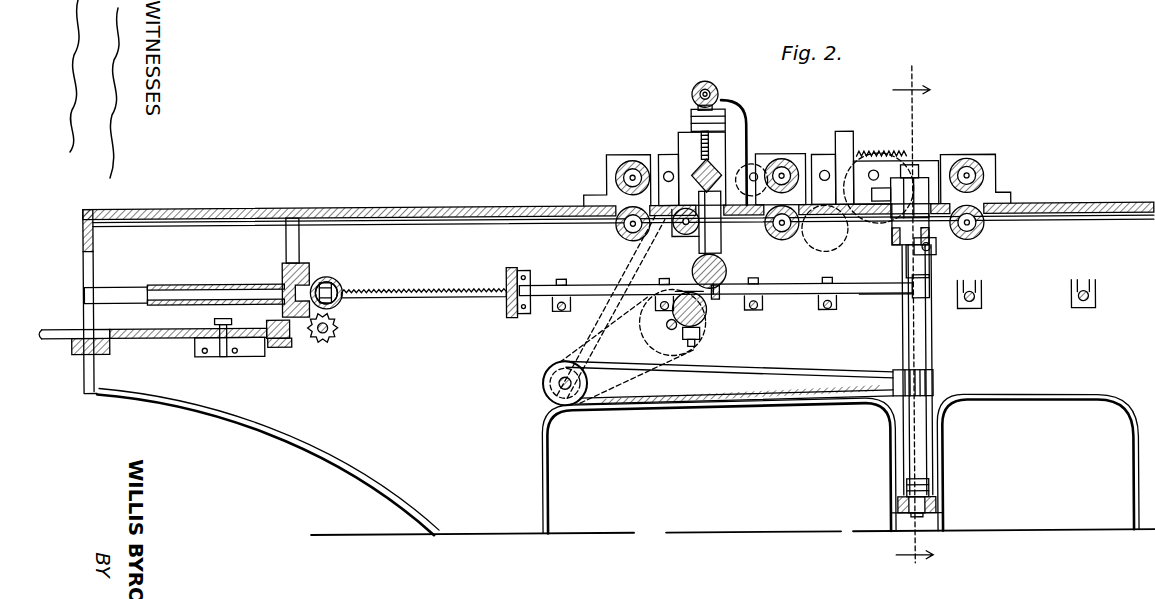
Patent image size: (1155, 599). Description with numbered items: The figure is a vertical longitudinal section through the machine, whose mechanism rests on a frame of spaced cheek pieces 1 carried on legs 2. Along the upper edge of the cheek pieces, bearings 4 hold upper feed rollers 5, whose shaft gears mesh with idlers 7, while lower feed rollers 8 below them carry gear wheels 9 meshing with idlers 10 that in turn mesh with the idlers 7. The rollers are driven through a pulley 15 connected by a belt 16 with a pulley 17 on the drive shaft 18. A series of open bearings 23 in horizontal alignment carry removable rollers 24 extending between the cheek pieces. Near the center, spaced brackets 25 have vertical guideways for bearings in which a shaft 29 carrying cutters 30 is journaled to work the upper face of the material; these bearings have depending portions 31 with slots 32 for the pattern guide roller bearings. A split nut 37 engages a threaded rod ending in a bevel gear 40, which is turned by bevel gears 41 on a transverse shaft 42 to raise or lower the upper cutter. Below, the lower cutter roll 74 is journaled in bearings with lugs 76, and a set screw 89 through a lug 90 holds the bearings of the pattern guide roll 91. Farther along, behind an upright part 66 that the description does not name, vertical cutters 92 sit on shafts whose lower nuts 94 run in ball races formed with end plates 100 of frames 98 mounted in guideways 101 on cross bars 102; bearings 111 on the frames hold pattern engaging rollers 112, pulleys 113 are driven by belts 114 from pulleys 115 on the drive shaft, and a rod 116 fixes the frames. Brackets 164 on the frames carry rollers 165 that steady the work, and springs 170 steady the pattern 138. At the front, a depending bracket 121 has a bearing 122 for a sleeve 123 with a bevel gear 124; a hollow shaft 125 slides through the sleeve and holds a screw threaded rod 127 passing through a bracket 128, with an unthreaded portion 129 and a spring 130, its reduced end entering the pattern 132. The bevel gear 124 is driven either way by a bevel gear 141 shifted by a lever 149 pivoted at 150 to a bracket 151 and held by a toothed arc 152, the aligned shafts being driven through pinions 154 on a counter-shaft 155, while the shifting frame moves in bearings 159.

The cheek pieces 1 is at (619, 288).
The legs 2 is at (619, 369).
The bearings 4 is at (600, 185).
The upper feed rollers 5 is at (622, 170).
The idlers 7 is at (664, 162).
The lower feed rollers 8 is at (618, 234).
The gear wheels 9 is at (764, 240).
The idlers 10 is at (828, 252).
The pulley 15 is at (700, 340).
The belt 16 is at (630, 374).
The pulley 17 is at (543, 390).
The drive shaft 18 is at (548, 381).
The open bearings 23 is at (560, 315).
The rollers 24 is at (560, 287).
The brackets 25 is at (690, 165).
The shaft 29 is at (744, 140).
The cutters 30 is at (694, 176).
The depending portions 31 is at (727, 273).
The slots 32 is at (718, 302).
The split nut 37 is at (728, 118).
The bevel gear 40 is at (697, 103).
The bevel gears 41 is at (703, 84).
The transverse shaft 42 is at (712, 84).
The post 66 is at (845, 157).
The lower cutter roll 74 is at (700, 248).
The lugs 76 is at (662, 217).
The set screw 89 is at (692, 350).
The lug 90 is at (684, 330).
The pattern guide roll 91 is at (688, 290).
The vertical cutters 92 is at (922, 166).
The nuts 94 is at (897, 506).
The frames 98 is at (903, 331).
The end plates 100 is at (898, 252).
The guideways 101 is at (955, 523).
The cross bars 102 is at (930, 490).
The bearings 111 is at (931, 268).
The pattern engaging rollers 112 is at (930, 296).
The pulleys 113 is at (935, 373).
The belts 114 is at (870, 370).
The pulleys 115 is at (562, 366).
The rod 116 is at (940, 250).
The depending bracket 121 is at (300, 252).
The bearing 122 is at (290, 342).
The sleeve 123 is at (286, 276).
The bevel gear 124 is at (315, 277).
The hollow shaft 125 is at (194, 283).
The screw threaded rod 127 is at (507, 300).
The bracket 128 is at (507, 280).
The unthreaded portion 129 is at (344, 288).
The spring 130 is at (338, 302).
The pattern 132 is at (618, 285).
The pattern 138 is at (790, 285).
The bevel gear 141 is at (334, 312).
The lever 149 is at (172, 328).
The pivot 150 is at (221, 325).
The bracket 151 is at (250, 355).
The toothed arc 152 is at (82, 342).
The pinions 154 is at (327, 347).
The counter-shaft 155 is at (338, 330).
The bearings 159 is at (270, 325).
The brackets 164 is at (880, 228).
The rollers 165 is at (898, 172).
The springs 170 is at (882, 298).